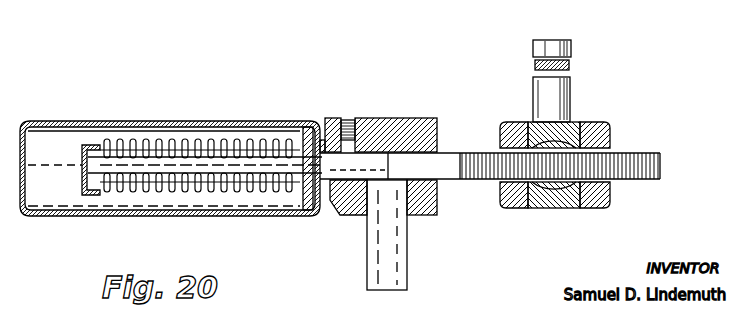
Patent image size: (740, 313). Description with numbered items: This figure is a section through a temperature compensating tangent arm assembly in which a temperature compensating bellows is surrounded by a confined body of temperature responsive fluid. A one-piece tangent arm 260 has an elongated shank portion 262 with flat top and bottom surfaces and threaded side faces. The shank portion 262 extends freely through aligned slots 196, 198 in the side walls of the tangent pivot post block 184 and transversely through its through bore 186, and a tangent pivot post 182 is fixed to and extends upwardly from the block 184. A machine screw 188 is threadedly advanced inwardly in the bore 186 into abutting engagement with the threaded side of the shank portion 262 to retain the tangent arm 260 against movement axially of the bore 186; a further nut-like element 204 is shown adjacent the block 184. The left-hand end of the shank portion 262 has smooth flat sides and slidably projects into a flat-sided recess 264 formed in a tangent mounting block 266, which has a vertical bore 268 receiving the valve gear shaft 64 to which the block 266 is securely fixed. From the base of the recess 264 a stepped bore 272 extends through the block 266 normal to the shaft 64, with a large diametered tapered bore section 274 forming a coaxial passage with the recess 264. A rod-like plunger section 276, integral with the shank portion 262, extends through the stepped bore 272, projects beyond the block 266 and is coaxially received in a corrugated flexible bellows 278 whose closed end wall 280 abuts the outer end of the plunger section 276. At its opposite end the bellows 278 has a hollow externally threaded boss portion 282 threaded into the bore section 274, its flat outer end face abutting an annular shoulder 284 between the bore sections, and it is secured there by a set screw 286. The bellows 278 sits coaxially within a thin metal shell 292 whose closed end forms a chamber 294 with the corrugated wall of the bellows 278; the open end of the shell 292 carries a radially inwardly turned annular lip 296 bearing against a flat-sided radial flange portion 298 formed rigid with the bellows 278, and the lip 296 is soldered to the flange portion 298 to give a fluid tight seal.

The valve gear shaft 64 is at (398, 237).
The tangent pivot post 182 is at (572, 45).
The block 184 is at (530, 210).
The through bore 186 is at (562, 196).
The machine screw 188 is at (552, 122).
The slot 196 is at (606, 131).
The slot 198 is at (502, 186).
The nut 204 is at (507, 122).
The tangent arm 260 is at (664, 154).
The shank portion 262 is at (644, 150).
The recess 264 is at (440, 151).
The tangent mounting block 266 is at (430, 118).
The vertical bore 268 is at (354, 214).
The stepped bore 272 is at (396, 160).
The bore section 274 is at (334, 205).
The plunger section 276 is at (280, 160).
The bellows 278 is at (216, 142).
The end wall 280 is at (90, 145).
The boss portion 282 is at (358, 150).
The annular shoulder 284 is at (357, 171).
The set screw 286 is at (350, 121).
The shell 292 is at (150, 123).
The chamber 294 is at (66, 202).
The annular lip 296 is at (334, 122).
The flange portion 298 is at (308, 125).